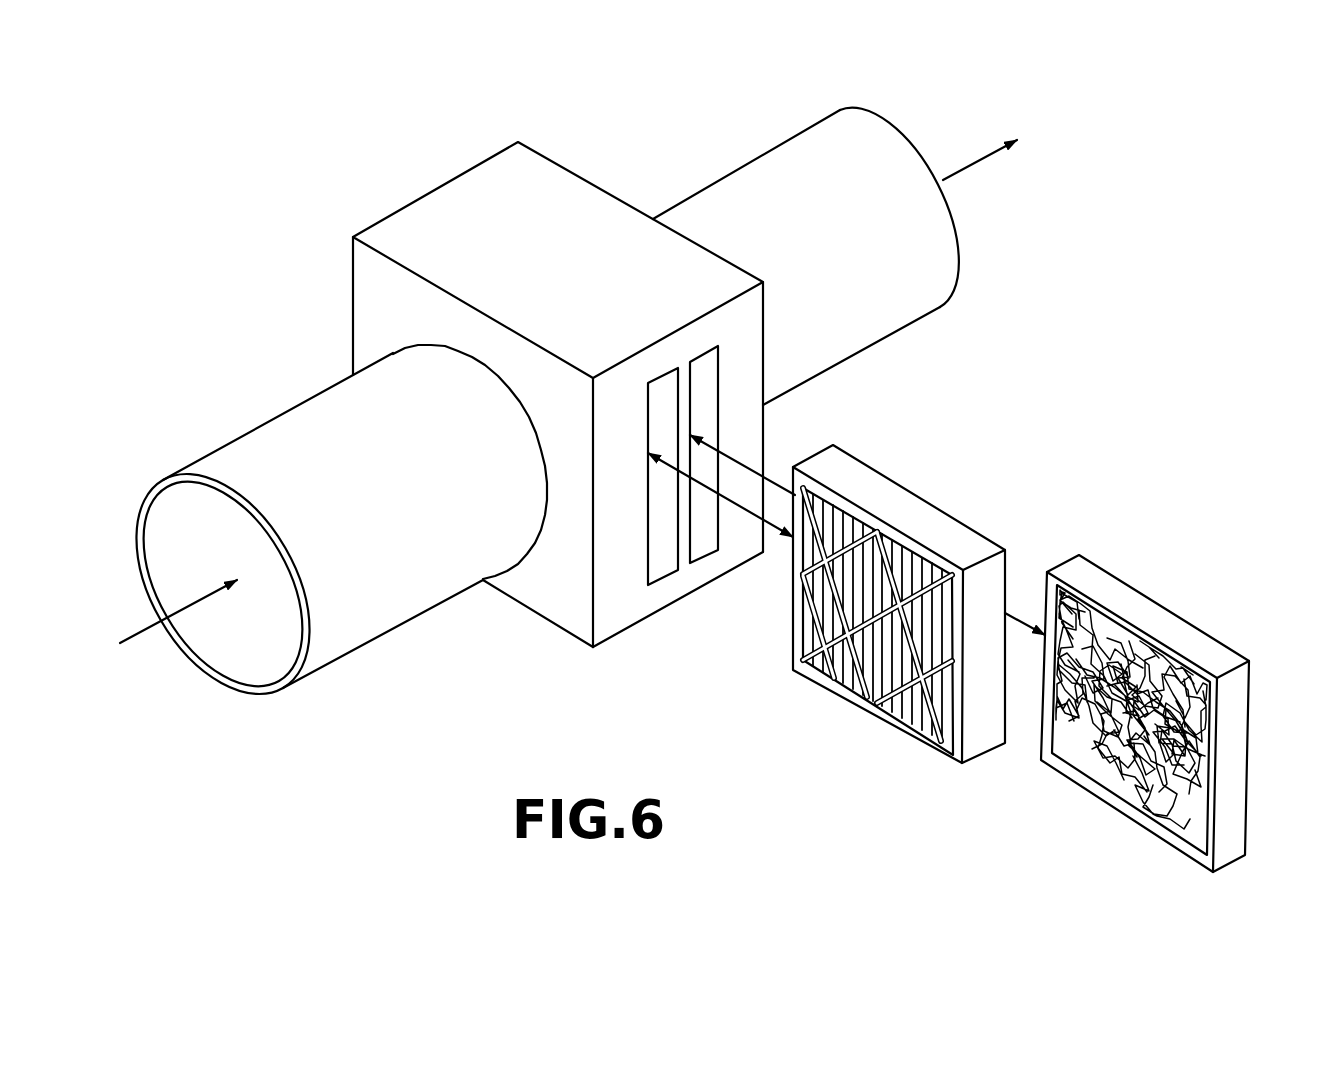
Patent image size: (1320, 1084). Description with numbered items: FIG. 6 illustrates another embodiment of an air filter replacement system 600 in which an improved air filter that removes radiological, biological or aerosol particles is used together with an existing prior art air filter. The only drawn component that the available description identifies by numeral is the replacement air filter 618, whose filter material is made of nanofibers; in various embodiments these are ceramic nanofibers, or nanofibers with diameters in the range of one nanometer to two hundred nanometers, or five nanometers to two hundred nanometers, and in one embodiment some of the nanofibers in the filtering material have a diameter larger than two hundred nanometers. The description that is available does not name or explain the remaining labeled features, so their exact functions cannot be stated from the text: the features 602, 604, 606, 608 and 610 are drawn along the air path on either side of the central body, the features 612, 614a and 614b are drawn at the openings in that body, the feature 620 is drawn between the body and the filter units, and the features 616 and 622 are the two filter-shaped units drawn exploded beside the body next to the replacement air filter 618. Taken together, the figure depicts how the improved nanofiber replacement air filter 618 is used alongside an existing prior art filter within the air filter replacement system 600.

The air treatment system 600 is at (1140, 266).
The inlet airflow 602 is at (147, 628).
The inlet duct 604 is at (410, 483).
The housing 606 is at (563, 252).
The outlet duct 608 is at (840, 212).
The outlet airflow 610 is at (973, 165).
The filter slots 612 is at (748, 491).
The first slot 614a is at (667, 540).
The second slot 614b is at (707, 422).
The second filter frame 616 is at (1127, 687).
The replacement air filter 618 is at (1137, 610).
The filter insertion path 620 is at (742, 512).
The first filter 622 is at (937, 525).